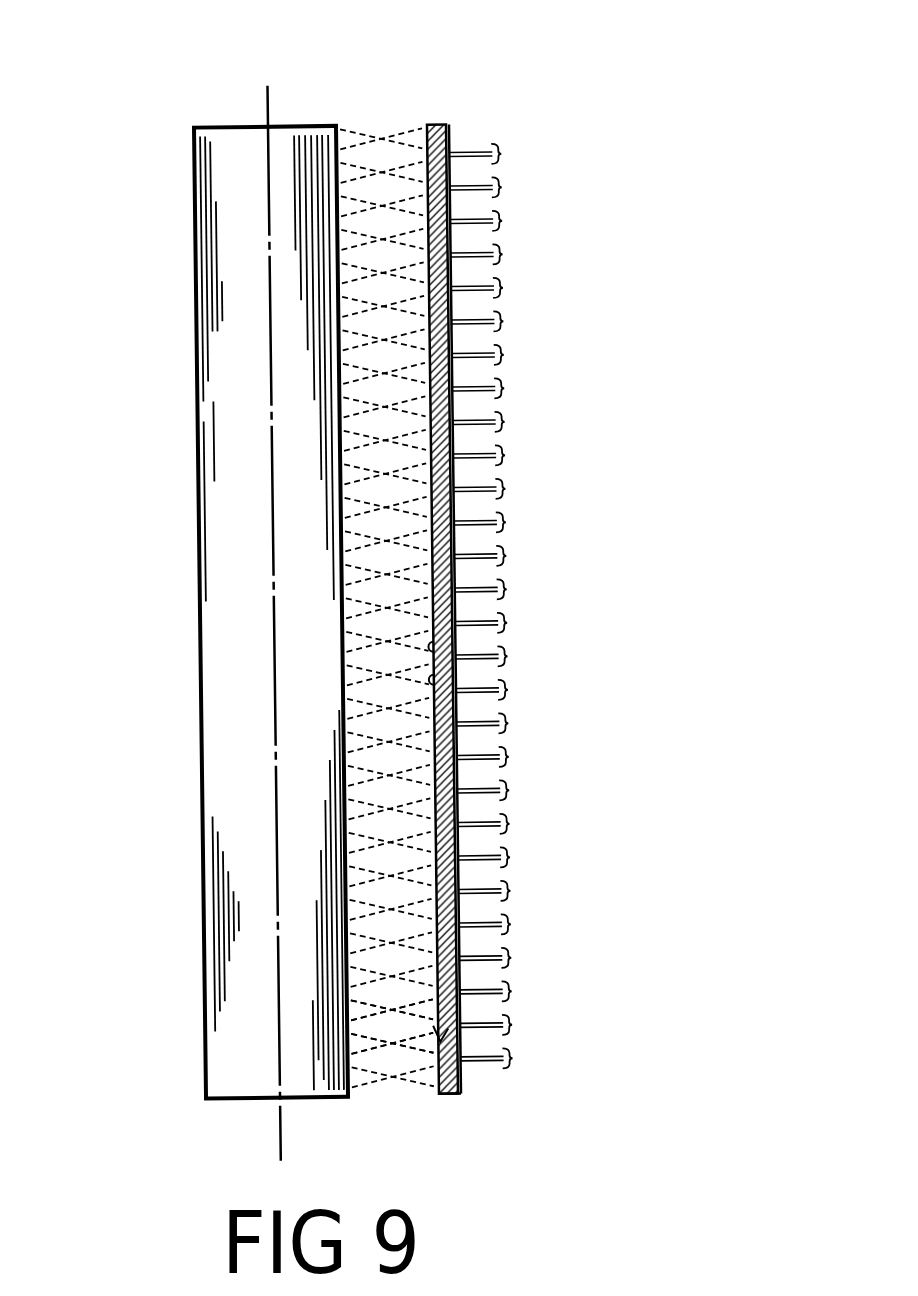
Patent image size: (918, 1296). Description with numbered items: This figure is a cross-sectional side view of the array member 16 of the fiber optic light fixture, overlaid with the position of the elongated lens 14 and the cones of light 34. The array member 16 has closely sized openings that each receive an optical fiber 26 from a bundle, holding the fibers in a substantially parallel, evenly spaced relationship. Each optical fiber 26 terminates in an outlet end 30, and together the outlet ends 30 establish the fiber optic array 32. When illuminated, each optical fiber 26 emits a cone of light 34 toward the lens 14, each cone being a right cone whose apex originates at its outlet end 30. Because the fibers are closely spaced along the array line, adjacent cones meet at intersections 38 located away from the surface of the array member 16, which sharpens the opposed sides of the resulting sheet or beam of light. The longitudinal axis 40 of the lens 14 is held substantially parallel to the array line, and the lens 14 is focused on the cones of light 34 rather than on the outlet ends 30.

The elongated lens 14 is at (195, 258).
The array member 16 is at (450, 138).
The optical fiber 26 is at (480, 486).
The outlet end 30 is at (440, 646).
The fiber optic array 32 is at (377, 95).
The cone of light 34 is at (418, 1066).
The intersections of the cones 38 is at (398, 1007).
The longitudinal axis 40 is at (275, 740).